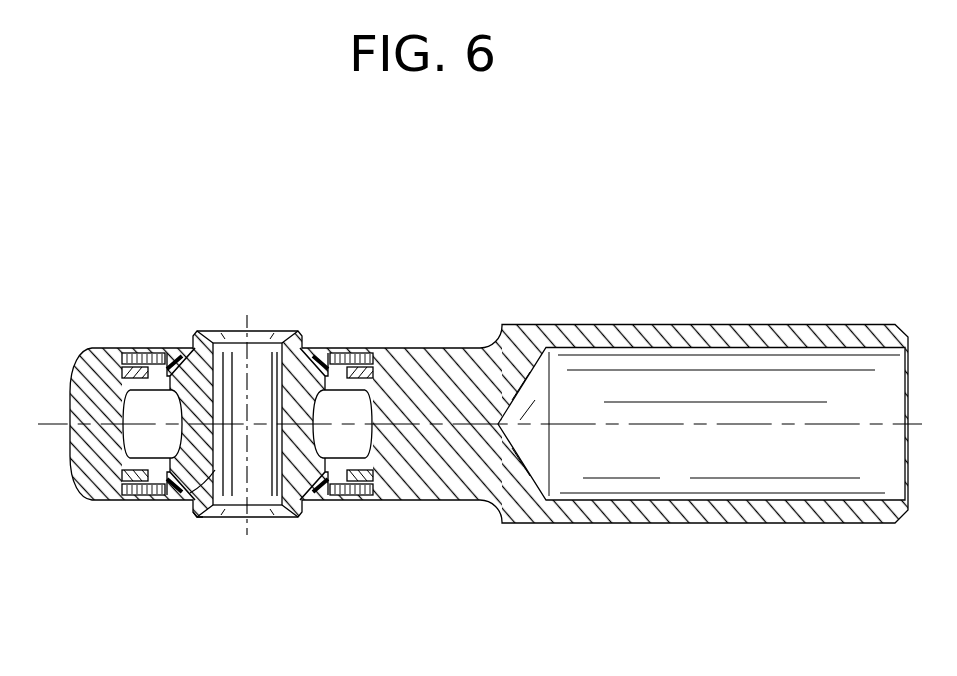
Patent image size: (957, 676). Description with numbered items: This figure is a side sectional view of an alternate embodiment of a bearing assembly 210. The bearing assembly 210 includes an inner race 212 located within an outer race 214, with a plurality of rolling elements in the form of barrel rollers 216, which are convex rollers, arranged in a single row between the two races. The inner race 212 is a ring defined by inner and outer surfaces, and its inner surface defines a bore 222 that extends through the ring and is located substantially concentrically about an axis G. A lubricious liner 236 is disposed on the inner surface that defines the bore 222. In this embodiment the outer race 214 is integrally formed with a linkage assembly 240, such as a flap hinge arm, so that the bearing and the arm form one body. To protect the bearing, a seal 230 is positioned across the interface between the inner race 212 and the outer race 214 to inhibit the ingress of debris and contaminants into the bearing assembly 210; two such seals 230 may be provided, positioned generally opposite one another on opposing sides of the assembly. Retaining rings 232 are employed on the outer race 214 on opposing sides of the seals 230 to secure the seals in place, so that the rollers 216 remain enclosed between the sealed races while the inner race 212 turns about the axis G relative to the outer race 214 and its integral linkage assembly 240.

The bearing assembly 210 is at (190, 213).
The inner race 212 is at (293, 332).
The outer race 214 is at (103, 501).
The barrel rollers 216 is at (121, 407).
The bore 222 is at (230, 311).
The seal 230 is at (318, 354).
The retaining rings 232 is at (352, 354).
The lubricious liner 236 is at (198, 518).
The linkage assembly 240 is at (533, 512).
The axis G is at (247, 527).